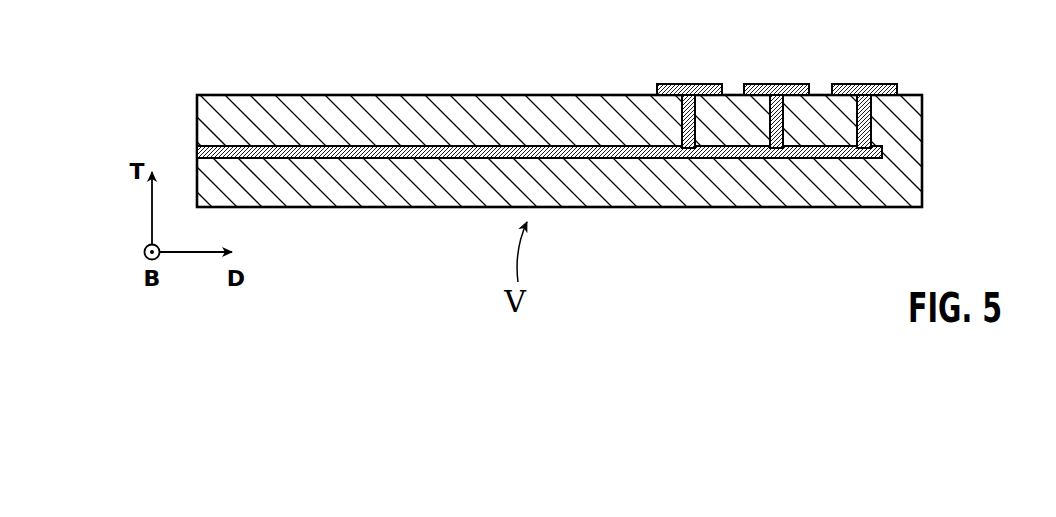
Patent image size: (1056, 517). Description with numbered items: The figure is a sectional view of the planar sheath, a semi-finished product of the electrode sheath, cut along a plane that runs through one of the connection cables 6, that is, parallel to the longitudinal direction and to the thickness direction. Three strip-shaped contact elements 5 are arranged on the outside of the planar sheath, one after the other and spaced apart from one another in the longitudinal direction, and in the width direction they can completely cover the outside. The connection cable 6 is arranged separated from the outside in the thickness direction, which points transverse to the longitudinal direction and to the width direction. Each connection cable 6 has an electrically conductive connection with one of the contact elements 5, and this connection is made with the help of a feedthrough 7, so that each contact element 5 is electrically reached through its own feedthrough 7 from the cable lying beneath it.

The contact element 5 is at (687, 84).
The connection cable 6 is at (377, 158).
The feedthrough 7 is at (681, 125).